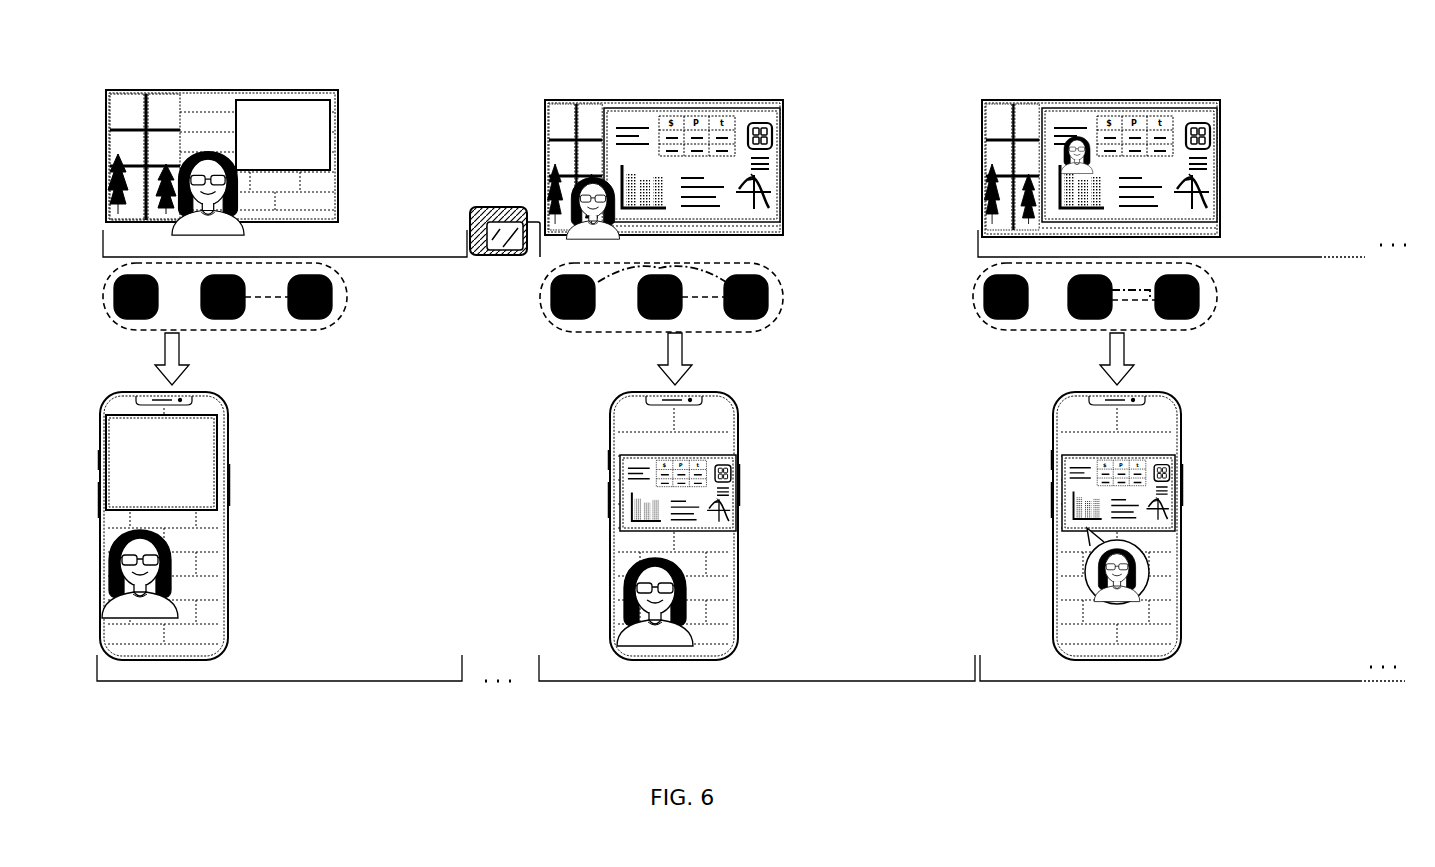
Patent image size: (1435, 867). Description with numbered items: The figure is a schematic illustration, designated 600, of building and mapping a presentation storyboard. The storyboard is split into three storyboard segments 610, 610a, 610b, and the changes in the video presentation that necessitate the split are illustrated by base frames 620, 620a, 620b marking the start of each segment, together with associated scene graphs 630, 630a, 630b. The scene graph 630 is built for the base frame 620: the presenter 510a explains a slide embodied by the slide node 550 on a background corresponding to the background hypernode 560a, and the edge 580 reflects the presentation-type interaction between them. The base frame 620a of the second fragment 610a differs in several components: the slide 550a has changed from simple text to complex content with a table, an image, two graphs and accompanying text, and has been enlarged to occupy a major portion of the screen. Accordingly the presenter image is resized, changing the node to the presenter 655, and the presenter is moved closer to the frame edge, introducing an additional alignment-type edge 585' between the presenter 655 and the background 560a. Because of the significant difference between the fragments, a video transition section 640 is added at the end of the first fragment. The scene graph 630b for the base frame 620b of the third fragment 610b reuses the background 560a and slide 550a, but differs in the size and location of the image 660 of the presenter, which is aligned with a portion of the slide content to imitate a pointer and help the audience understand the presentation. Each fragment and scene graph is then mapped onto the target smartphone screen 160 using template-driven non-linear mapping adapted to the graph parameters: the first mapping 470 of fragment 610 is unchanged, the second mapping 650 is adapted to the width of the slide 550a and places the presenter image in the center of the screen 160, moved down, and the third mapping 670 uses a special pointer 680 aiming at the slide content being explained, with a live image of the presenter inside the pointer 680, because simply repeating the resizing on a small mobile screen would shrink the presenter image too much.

The video conferencing environment 600 is at (1406, 112).
The storyboard segment 610 is at (370, 257).
The second storyboard segment 610a is at (808, 257).
The third storyboard segment 610b is at (1247, 257).
The base frame 620 is at (340, 122).
The base frame 620a is at (785, 138).
The base frame 620b is at (1222, 140).
The scene graph 630 is at (347, 297).
The scene graph 630a is at (785, 297).
The scene graph 630b is at (1218, 297).
The video transition section 640 is at (500, 207).
The background hypernode 560a is at (125, 317).
The slide node 550 is at (228, 318).
The slide 550a is at (651, 316).
The presenter 510a is at (333, 306).
The edge 580 is at (283, 300).
The alignment edge 585' is at (639, 325).
The presenter node 655 is at (772, 306).
The presenter image 660 is at (1078, 140).
The target smartphone screen 160 is at (230, 508).
The first mapping 470 is at (201, 546).
The second mapping 650 is at (674, 496).
The third mapping 670 is at (1117, 496).
The pointer 680 is at (1062, 553).